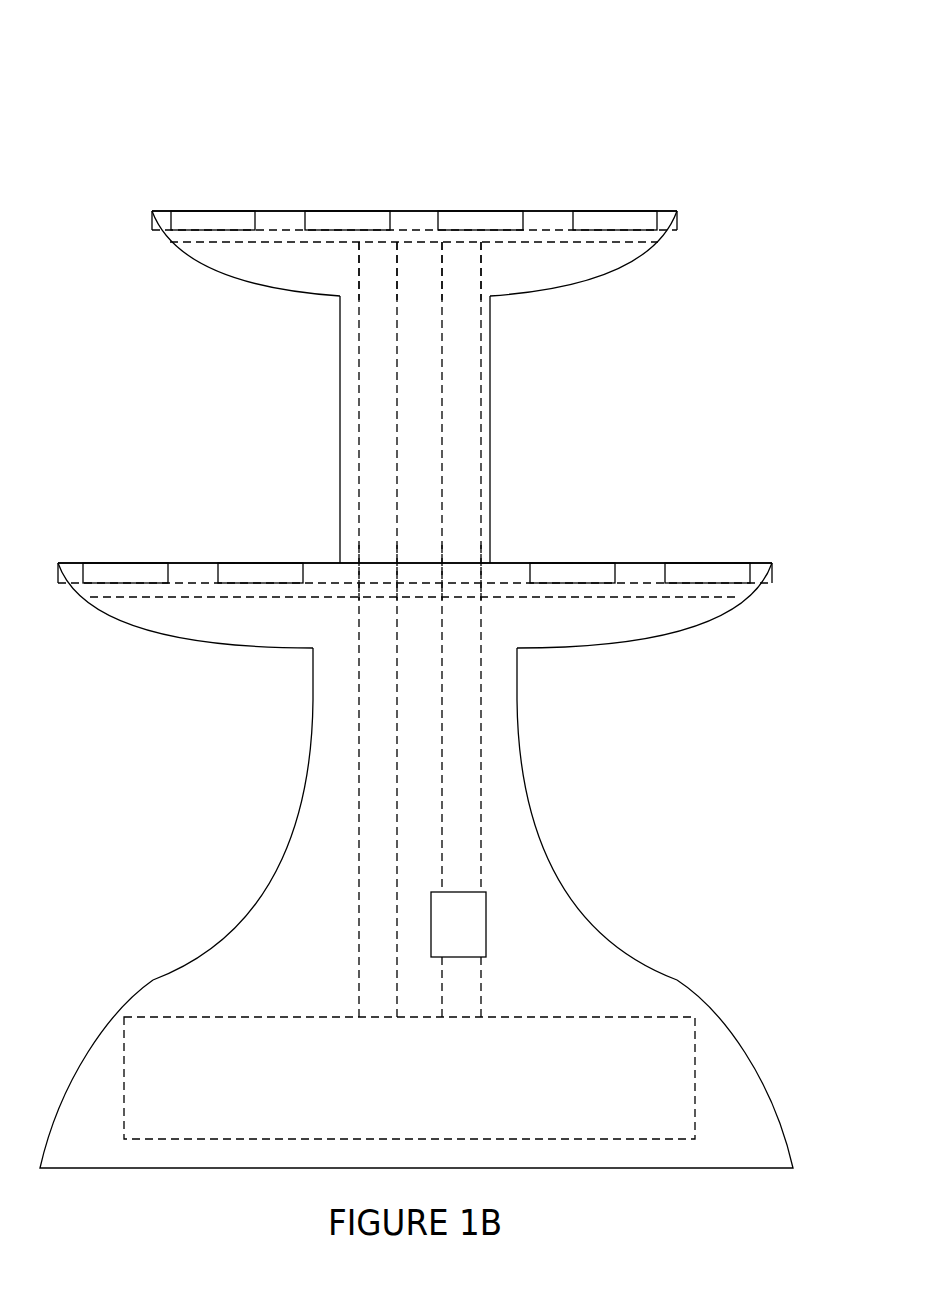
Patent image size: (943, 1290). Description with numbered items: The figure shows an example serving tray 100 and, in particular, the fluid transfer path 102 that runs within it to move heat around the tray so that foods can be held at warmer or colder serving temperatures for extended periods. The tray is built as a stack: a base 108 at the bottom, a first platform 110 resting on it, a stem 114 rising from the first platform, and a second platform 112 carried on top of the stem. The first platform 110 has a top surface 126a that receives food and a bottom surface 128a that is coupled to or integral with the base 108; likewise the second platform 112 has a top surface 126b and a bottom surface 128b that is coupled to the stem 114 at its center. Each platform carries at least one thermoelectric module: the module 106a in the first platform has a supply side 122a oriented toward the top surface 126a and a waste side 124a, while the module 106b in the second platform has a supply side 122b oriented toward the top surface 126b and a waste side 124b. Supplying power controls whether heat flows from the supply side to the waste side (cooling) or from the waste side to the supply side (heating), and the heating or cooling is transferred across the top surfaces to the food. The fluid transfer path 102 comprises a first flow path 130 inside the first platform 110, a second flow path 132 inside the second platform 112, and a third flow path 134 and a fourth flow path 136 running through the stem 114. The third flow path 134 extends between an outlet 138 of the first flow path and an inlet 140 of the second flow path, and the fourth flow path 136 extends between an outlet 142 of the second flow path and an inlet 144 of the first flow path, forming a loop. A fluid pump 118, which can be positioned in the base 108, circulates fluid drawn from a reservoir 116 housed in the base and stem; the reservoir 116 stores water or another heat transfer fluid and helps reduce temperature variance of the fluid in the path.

The serving tray 100 is at (135, 100).
The fluid transfer path 102 is at (482, 805).
The thermoelectric module 106a is at (760, 573).
The thermoelectric module 106b is at (664, 217).
The base 108 is at (130, 995).
The first platform 110 is at (145, 630).
The second platform 112 is at (200, 268).
The stem 114 is at (339, 486).
The reservoir 116 is at (292, 1016).
The fluid pump 118 is at (488, 937).
The supply side 122a is at (714, 562).
The supply side 122b is at (609, 210).
The waste side 124a is at (732, 592).
The waste side 124b is at (664, 238).
The top surface 126a is at (200, 562).
The top surface 126b is at (287, 210).
The bottom surface 128a is at (212, 650).
The bottom surface 128b is at (262, 292).
The first flow path 130 is at (90, 597).
The second flow path 132 is at (172, 242).
The third flow path 134 is at (484, 421).
The fourth flow path 136 is at (357, 421).
The outlet 138 is at (467, 582).
The inlet 140 is at (464, 246).
The outlet 142 is at (380, 246).
The inlet 144 is at (385, 582).